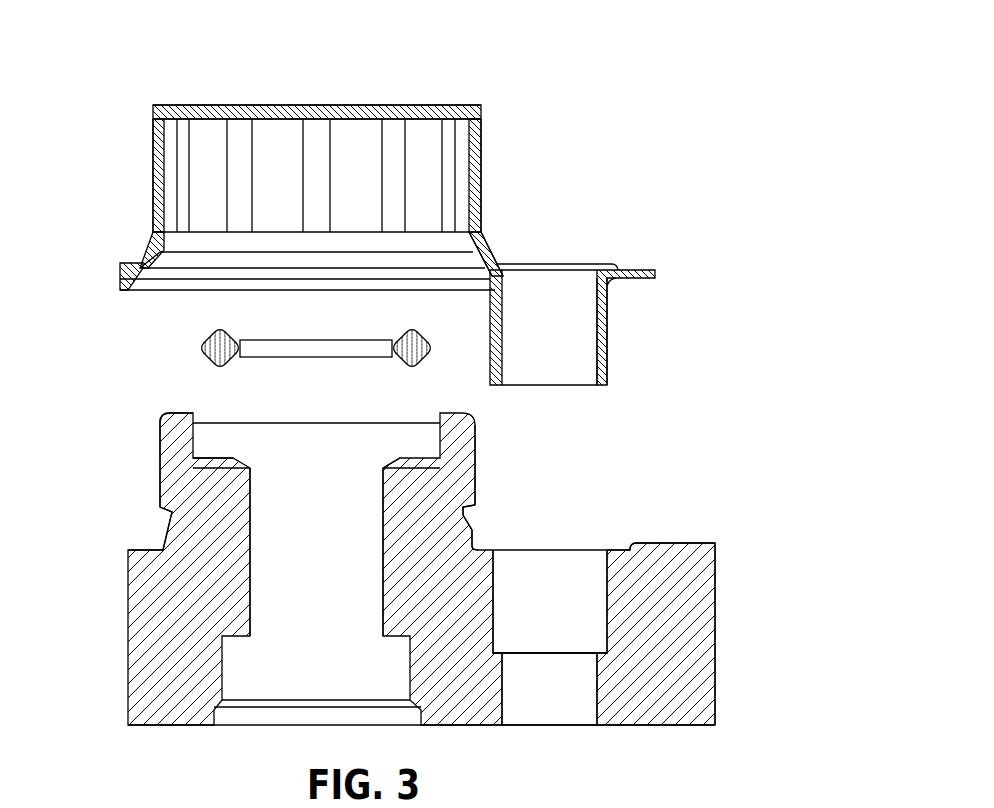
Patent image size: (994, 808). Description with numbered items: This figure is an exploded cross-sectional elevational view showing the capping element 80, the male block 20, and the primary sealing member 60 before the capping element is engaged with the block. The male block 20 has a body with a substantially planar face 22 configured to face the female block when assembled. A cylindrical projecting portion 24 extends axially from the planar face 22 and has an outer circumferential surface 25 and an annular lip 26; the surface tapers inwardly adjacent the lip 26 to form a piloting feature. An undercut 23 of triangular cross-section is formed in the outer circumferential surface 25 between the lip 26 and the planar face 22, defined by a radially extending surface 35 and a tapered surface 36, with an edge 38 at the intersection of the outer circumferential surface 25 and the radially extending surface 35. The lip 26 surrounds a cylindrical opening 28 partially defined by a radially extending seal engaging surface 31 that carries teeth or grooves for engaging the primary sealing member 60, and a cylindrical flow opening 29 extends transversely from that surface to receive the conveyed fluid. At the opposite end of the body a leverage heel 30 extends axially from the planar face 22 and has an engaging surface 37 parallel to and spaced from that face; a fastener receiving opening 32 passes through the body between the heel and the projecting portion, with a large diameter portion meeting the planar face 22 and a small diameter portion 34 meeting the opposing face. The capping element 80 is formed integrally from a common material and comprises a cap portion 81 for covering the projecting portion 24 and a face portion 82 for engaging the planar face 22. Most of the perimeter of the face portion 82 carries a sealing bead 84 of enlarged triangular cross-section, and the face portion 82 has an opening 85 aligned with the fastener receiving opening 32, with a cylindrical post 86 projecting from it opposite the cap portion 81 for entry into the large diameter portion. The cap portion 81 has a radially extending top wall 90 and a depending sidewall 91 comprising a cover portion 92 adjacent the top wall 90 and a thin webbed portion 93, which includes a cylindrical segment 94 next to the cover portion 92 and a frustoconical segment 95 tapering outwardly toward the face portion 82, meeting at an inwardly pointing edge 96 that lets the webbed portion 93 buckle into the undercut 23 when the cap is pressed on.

The male seal fitting block 20 is at (680, 626).
The planar face 22 is at (130, 548).
The undercut 23 is at (478, 525).
The cylindrical projecting portion 24 is at (158, 447).
The outer circumferential surface 25 is at (478, 455).
The annular lip 26 is at (178, 413).
The cylindrical opening 28 is at (218, 447).
The cylindrical flow opening 29 is at (383, 512).
The leverage heel 30 is at (705, 543).
The seal engaging surface 31 is at (390, 455).
The fastener receiving opening 32 is at (607, 598).
The small diameter portion 34 is at (597, 683).
The radially extending surface 35 is at (474, 518).
The tapered surface 36 is at (470, 535).
The engaging surface 37 is at (672, 545).
The edge 38 is at (163, 510).
The primary sealing member 60 is at (198, 345).
The capping element 80 is at (215, 68).
The cap portion 81 is at (147, 96).
The face portion 82 is at (632, 268).
The sealing bead 84 is at (118, 268).
The opening 85 is at (597, 322).
The cylindrical post 86 is at (607, 345).
The top wall 90 is at (318, 105).
The sidewall 91 is at (153, 133).
The cover portion 92 is at (482, 124).
The webbed portion 93 is at (155, 236).
The cylindrical segment 94 is at (485, 240).
The frustoconical segment 95 is at (493, 262).
The inwardly pointing edge 96 is at (150, 240).